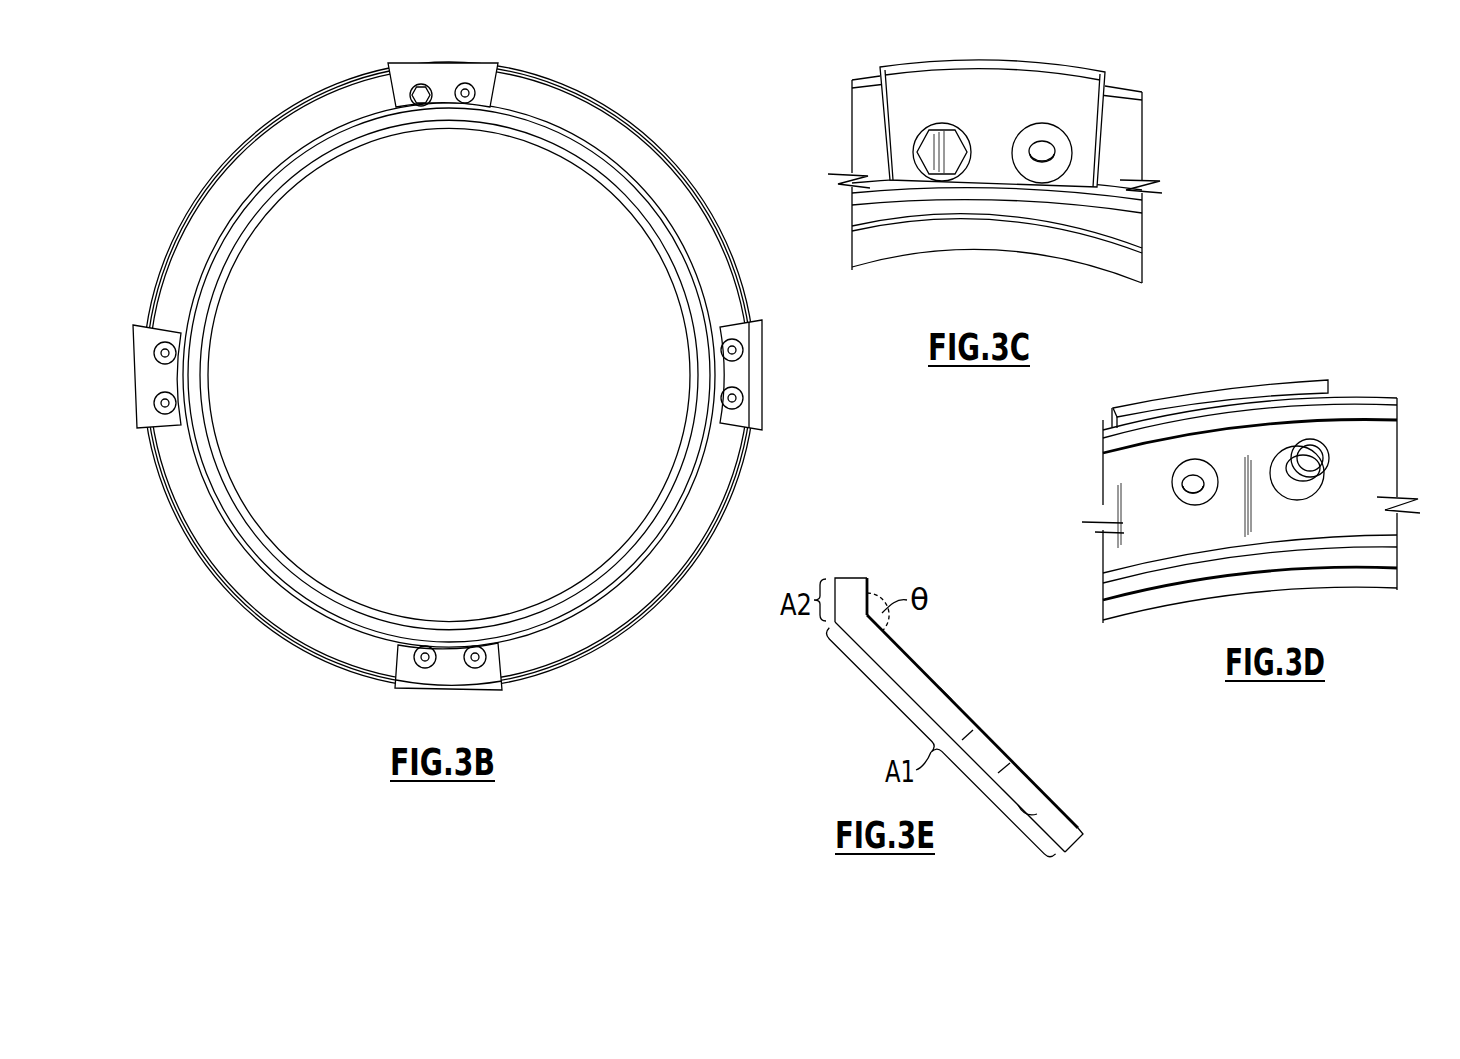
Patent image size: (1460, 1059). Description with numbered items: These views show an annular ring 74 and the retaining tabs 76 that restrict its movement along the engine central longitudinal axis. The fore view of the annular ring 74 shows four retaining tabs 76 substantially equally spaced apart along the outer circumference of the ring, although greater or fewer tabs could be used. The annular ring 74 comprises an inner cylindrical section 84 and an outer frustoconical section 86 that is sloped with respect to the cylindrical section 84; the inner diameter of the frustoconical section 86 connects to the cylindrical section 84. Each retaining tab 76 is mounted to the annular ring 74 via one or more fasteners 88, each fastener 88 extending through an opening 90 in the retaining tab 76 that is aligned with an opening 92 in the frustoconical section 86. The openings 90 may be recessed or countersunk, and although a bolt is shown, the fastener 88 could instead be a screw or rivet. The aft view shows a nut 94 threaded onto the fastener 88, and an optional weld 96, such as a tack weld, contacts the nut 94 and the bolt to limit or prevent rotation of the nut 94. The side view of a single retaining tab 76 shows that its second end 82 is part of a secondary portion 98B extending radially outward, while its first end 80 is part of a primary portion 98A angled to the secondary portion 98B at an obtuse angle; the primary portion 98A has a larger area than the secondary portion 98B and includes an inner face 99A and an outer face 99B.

In FIG. 3B, the annular ring 74 is at (424, 375).
In FIG. 3C, the annular ring 74 is at (997, 172).
In FIG. 3D, the annular ring 74 is at (1240, 502).
In FIG. 3B, the retaining tab 76 is at (407, 80).
In FIG. 3C, the retaining tab 76 is at (1031, 106).
In FIG. 3D, the retaining tab 76 is at (1332, 380).
In FIG. 3E, the retaining tab 76 is at (967, 706).
In FIG. 3E, the first end 80 is at (1072, 847).
In FIG. 3E, the second end 82 is at (851, 576).
In FIG. 3B, the inner cylindrical section 84 is at (200, 372).
In FIG. 3C, the inner cylindrical section 84 is at (927, 246).
In FIG. 3D, the inner cylindrical section 84 is at (1210, 588).
In FIG. 3B, the outer frustoconical section 86 is at (160, 297).
In FIG. 3C, the outer frustoconical section 86 is at (1122, 156).
In FIG. 3D, the outer frustoconical section 86 is at (1115, 517).
In FIG. 3C, the fastener 88 is at (952, 140).
In FIG. 3D, the fastener 88 is at (1318, 452).
In FIG. 3C, the opening 90 is at (1047, 140).
In FIG. 3D, the opening 92 is at (1190, 498).
In FIG. 3D, the nut 94 is at (1305, 490).
In FIG. 3D, the weld 96 is at (1318, 475).
In FIG. 3E, the primary portion 98A is at (948, 692).
In FIG. 3E, the secondary portion 98B is at (870, 583).
In FIG. 3E, the inner face 99A is at (1037, 810).
In FIG. 3E, the outer face 99B is at (966, 722).